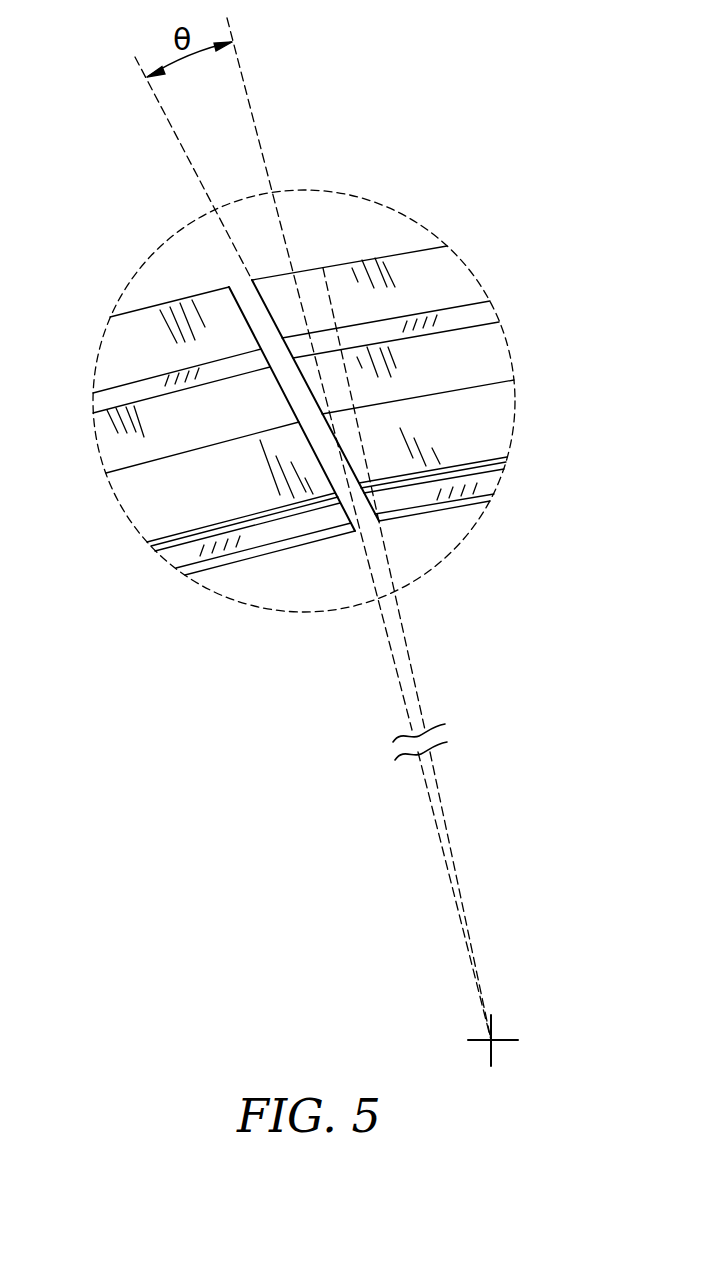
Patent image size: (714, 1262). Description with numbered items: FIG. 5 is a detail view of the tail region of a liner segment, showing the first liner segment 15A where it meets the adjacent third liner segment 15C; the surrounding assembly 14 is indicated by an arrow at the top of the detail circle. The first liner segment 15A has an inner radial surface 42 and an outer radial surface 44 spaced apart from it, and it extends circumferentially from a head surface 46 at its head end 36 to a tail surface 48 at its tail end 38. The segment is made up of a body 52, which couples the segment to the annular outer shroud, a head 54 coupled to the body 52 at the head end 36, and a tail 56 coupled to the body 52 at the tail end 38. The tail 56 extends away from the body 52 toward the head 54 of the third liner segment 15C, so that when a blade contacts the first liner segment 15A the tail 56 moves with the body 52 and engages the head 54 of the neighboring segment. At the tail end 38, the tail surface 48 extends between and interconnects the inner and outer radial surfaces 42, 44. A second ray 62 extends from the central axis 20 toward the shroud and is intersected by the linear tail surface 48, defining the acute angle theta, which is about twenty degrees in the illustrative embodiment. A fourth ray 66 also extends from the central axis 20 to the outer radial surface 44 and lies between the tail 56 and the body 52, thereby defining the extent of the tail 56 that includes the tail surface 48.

The display assembly 14 is at (404, 160).
The first liner segment 15A is at (455, 297).
The third liner segment 15C is at (122, 452).
The central axis 20 is at (497, 1034).
The head end 36 is at (332, 550).
The tail end 38 is at (424, 533).
The inner radial surface 42 is at (470, 507).
The outer radial surface 44 is at (147, 308).
The head surface 46 is at (318, 396).
The tail surface 48 is at (300, 388).
The body 52 is at (487, 370).
The head 54 is at (160, 352).
The tail 56 is at (306, 287).
The second ray 62 is at (407, 712).
The fourth ray 66 is at (413, 672).